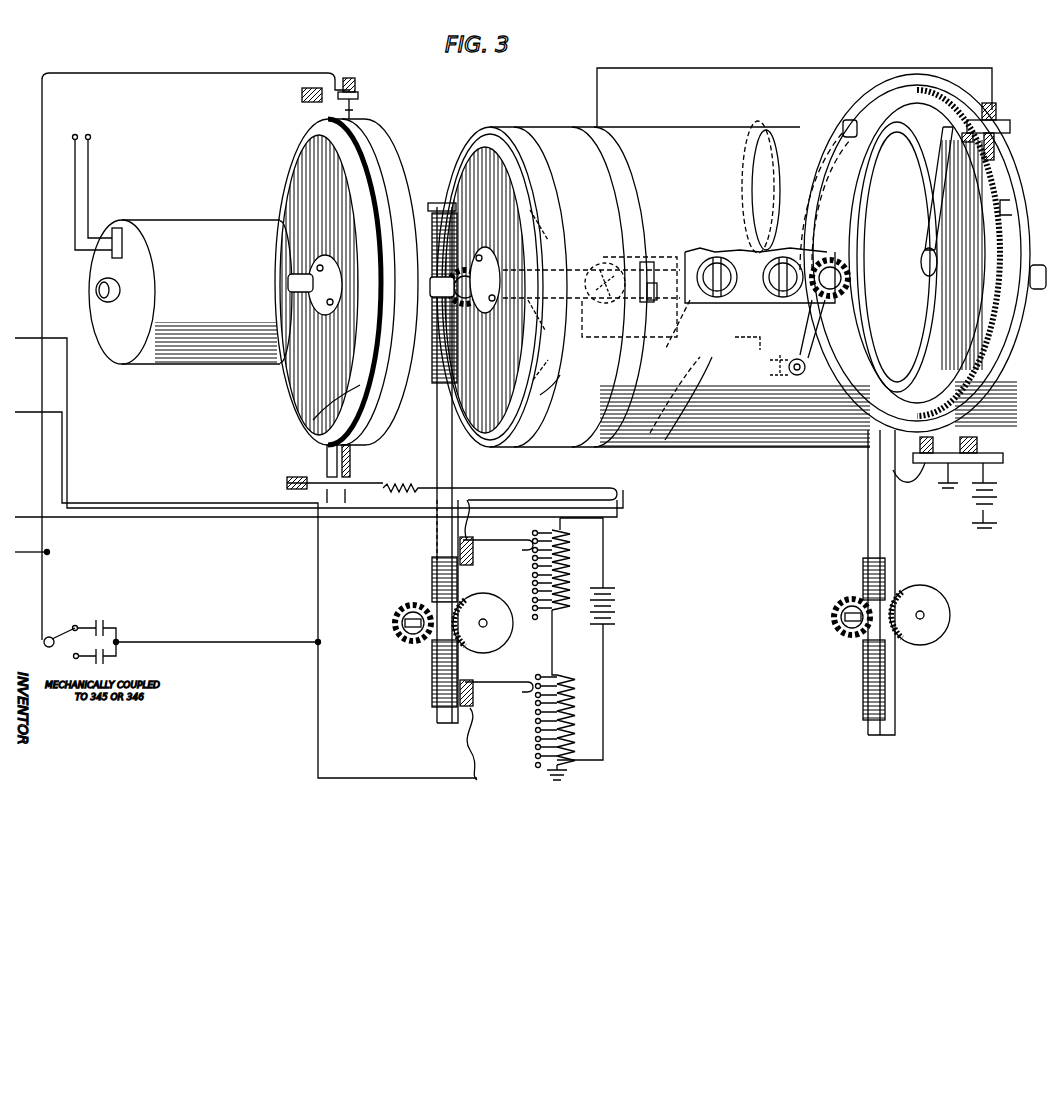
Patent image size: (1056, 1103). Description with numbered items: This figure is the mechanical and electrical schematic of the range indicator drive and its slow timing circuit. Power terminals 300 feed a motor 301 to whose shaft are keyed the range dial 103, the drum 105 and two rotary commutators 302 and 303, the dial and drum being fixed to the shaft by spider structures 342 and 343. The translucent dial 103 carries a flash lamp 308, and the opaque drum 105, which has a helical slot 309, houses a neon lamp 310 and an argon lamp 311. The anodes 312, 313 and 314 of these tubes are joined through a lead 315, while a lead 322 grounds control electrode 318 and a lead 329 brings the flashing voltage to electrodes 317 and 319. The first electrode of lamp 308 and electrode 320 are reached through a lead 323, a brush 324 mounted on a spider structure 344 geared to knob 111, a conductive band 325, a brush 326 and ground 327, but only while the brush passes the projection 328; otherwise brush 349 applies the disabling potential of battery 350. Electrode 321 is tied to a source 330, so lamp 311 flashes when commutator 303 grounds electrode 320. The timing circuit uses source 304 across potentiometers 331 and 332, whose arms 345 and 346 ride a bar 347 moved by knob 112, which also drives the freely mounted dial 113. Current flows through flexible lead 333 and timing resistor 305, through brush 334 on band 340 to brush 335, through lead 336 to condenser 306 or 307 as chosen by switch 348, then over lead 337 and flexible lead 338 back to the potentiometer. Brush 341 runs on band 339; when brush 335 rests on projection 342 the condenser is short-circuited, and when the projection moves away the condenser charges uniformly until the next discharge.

The lead 336 is at (117, 73).
The power terminals 300 is at (88, 134).
The motor 301 is at (182, 230).
The commutator 302 is at (307, 162).
The brush 335 is at (355, 125).
The conductive band 339 is at (353, 142).
The conductive band 340 is at (383, 157).
The dial 113 is at (503, 132).
The dial 103 is at (552, 130).
The lead 323 is at (702, 68).
The helical slot 309 is at (768, 125).
The spider structure 343 is at (824, 122).
The commutator 303 is at (910, 150).
The spider structure 344 is at (950, 125).
The brush 324 is at (998, 150).
The conductive band 325 is at (1000, 178).
The projection 328 is at (1010, 212).
The flash lamp 308 is at (635, 258).
The flash lamp 310 is at (705, 258).
The anode 313 is at (728, 250).
The flash lamp 311 is at (780, 258).
The anode 314 is at (805, 255).
The anode 312 is at (591, 294).
The control electrode 317 is at (663, 297).
The control electrode 318 is at (675, 366).
The control electrode 319 is at (697, 389).
The control electrode 320 is at (752, 348).
The control electrode 321 is at (810, 335).
The source 330 is at (760, 369).
The drum 105 is at (715, 440).
The brush 326 is at (895, 478).
The ground 327 is at (942, 490).
The brush 349 is at (978, 445).
The battery 350 is at (998, 494).
The projection 342 is at (313, 420).
The brush 341 is at (330, 460).
The brush 334 is at (372, 460).
The timing resistor 305 is at (425, 474).
The bar 347 is at (458, 466).
The lead 315 is at (525, 497).
The lead 329 is at (102, 503).
The lead 322 is at (88, 517).
The flexible lead 333 is at (470, 527).
The potentiometer arm 346 is at (493, 540).
The knob 112 is at (495, 605).
The potentiometer 332 is at (572, 560).
The source 304 is at (616, 598).
The potentiometer arm 345 is at (490, 686).
The potentiometer 331 is at (578, 710).
The flexible lead 338 is at (478, 742).
The switch 348 is at (58, 630).
The condenser 306 is at (102, 620).
The lead 337 is at (235, 642).
The condenser 307 is at (104, 662).
The knob 111 is at (930, 600).